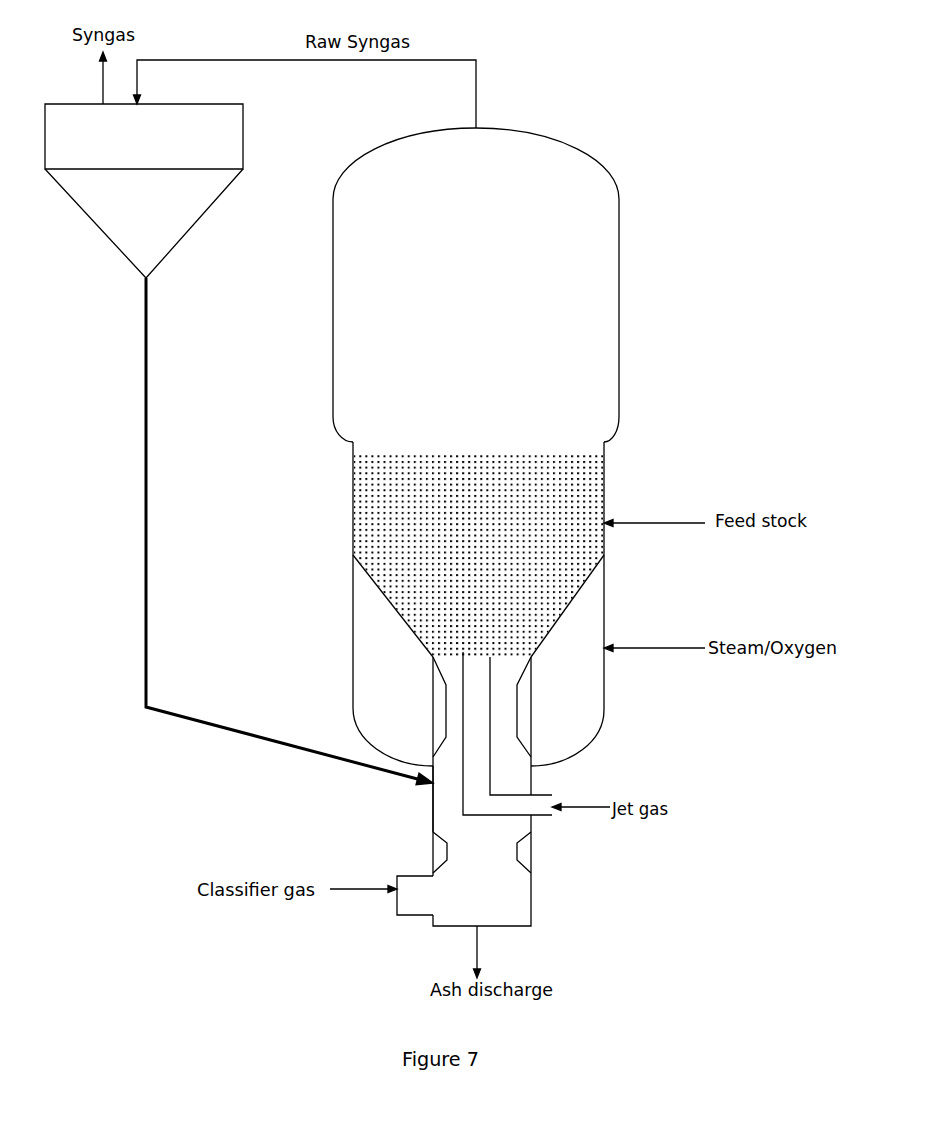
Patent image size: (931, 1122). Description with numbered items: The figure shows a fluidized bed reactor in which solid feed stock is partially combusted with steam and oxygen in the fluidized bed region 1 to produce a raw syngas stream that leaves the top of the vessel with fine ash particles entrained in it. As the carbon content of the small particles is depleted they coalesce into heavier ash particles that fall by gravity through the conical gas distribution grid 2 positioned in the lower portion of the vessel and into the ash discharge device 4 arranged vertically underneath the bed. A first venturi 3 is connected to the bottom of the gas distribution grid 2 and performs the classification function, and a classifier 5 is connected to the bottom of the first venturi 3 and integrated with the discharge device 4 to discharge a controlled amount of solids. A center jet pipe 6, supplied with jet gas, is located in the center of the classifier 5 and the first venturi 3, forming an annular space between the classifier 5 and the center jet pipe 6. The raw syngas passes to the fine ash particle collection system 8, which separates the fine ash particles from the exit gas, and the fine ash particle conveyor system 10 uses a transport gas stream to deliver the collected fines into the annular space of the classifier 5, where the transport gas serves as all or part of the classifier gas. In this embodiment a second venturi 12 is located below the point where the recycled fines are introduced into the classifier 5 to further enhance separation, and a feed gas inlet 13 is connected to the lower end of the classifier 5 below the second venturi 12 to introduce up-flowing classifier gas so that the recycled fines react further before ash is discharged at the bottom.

The fluidized bed region 1 is at (478, 555).
The conical gas distribution grid 2 is at (577, 592).
The first venturi 3 is at (524, 707).
The ash discharge device 4 is at (445, 707).
The classifier 5 is at (441, 799).
The center jet pipe 6 is at (507, 733).
The fine ash particle collection system 8 is at (144, 191).
The fine ash particle conveyor system 10 is at (289, 531).
The second venturi 12 is at (433, 851).
The feed gas inlet 13 is at (415, 895).